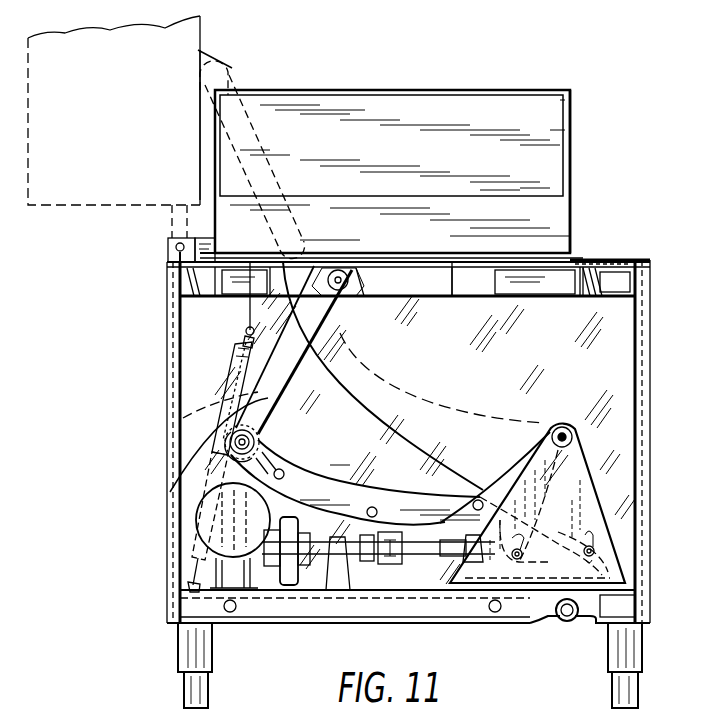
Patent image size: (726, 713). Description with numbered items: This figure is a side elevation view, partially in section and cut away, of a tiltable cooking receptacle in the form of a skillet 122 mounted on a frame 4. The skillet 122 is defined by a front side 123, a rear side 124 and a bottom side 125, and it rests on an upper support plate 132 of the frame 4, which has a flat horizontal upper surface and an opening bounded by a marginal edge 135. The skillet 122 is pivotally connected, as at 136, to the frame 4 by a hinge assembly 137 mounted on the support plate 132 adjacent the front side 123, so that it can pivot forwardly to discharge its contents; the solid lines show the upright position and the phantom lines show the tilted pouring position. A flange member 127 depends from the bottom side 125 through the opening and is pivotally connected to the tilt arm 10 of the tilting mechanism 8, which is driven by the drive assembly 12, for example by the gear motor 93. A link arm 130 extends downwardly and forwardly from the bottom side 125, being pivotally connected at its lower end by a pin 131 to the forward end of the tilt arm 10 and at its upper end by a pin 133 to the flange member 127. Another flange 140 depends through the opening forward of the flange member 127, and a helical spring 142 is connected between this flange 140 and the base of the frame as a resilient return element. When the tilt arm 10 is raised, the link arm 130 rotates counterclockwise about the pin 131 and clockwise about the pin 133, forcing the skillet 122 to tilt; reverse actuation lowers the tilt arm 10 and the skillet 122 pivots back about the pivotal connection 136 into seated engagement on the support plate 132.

The frame 4 is at (654, 318).
The tilting mechanism 8 is at (598, 480).
The tilt arm 10 is at (298, 463).
The drive assembly 12 is at (200, 524).
The gear motor 93 is at (280, 580).
The skillet 122 is at (167, 40).
The front side 123 is at (215, 148).
The rear side 124 is at (572, 190).
The bottom side 125 is at (455, 262).
The flange member 127 is at (356, 282).
The link arm 130 is at (250, 160).
The pin 131 is at (216, 468).
The upper support plate 132 is at (600, 262).
The pin 133 is at (338, 280).
The marginal edge 135 is at (267, 283).
The pivotal connection 136 is at (176, 247).
The hinge assembly 137 is at (178, 255).
The flange 140 is at (247, 307).
The helical spring 142 is at (230, 404).